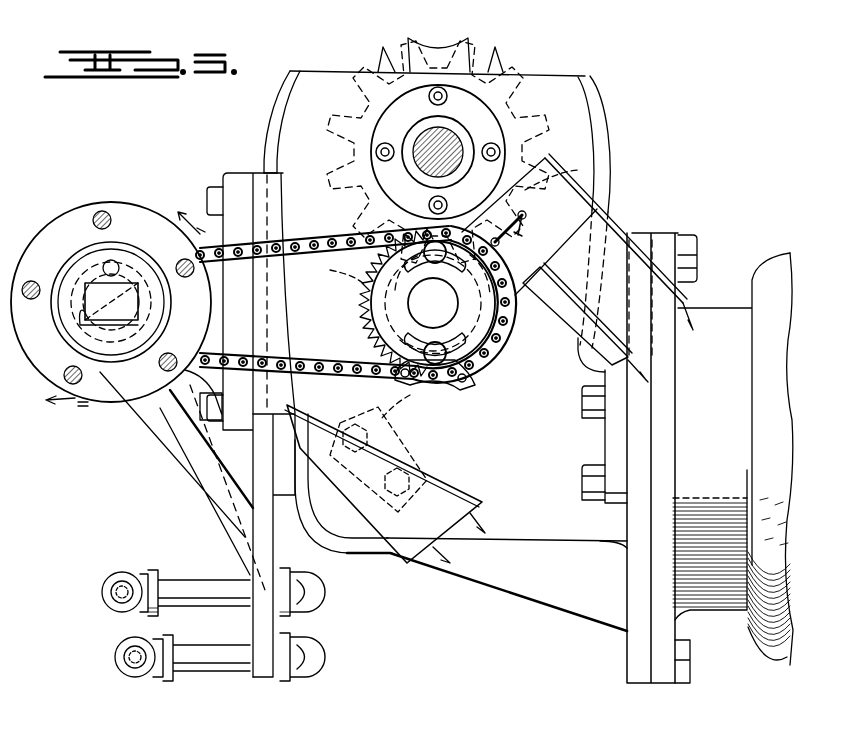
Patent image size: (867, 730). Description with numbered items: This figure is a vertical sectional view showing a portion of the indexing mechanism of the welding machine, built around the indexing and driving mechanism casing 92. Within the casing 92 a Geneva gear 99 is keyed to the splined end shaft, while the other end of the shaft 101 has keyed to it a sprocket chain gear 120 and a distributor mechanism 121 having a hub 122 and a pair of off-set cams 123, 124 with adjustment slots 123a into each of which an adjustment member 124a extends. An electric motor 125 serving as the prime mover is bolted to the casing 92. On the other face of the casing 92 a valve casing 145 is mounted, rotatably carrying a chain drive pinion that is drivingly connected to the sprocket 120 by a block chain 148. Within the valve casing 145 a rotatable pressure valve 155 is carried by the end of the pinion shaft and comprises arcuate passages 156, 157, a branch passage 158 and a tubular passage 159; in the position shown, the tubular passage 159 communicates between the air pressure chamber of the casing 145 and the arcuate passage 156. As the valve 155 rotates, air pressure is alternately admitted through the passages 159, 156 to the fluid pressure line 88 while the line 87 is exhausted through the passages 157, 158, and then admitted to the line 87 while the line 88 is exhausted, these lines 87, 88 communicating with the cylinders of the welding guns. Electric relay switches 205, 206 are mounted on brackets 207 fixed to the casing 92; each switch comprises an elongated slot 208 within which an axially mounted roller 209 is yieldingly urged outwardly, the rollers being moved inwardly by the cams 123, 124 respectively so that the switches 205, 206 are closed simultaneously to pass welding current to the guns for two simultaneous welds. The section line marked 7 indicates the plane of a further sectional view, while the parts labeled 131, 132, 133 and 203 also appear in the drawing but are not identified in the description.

The Geneva gear 99 is at (430, 46).
The indexing and driving mechanism casing 92 is at (272, 98).
The valve casing 145 is at (63, 218).
The tubular passage 159 is at (111, 260).
The arcuate passage 156 is at (128, 255).
The branch passage 158 is at (80, 290).
The key block 131 is at (160, 292).
The arcuate passage 157 is at (160, 315).
The rotatable pressure valve 155 is at (65, 316).
The bearing flange 132 is at (492, 126).
The shaft hub 133 is at (462, 146).
The off-set cam 124 is at (440, 232).
The block chain 148 is at (290, 236).
The link 203 is at (535, 198).
The roller 209 is at (535, 220).
The elongated slot 208 is at (527, 232).
The distributor mechanism 121 is at (540, 260).
The electric relay switch 206 is at (625, 230).
The adjustment slot 123a is at (360, 290).
The sprocket chain gear 120 is at (358, 320).
The hub 122 is at (485, 320).
The shaft 101 is at (480, 345).
The adjustment member 124a is at (455, 372).
The off-set cam 123 is at (420, 390).
The electric relay switch 205 is at (385, 560).
The bracket 207 is at (410, 575).
The electric motor 125 is at (692, 605).
The fluid pressure line 87 is at (102, 585).
The fluid pressure line 88 is at (118, 665).
The section line 7 is at (105, 301).